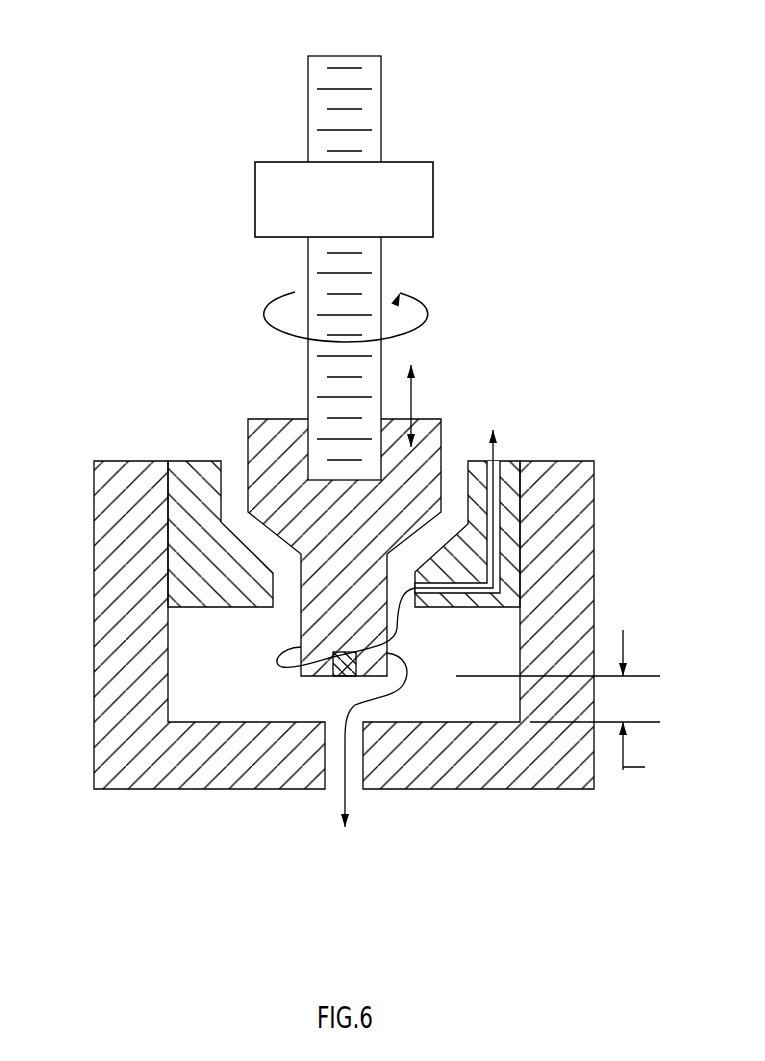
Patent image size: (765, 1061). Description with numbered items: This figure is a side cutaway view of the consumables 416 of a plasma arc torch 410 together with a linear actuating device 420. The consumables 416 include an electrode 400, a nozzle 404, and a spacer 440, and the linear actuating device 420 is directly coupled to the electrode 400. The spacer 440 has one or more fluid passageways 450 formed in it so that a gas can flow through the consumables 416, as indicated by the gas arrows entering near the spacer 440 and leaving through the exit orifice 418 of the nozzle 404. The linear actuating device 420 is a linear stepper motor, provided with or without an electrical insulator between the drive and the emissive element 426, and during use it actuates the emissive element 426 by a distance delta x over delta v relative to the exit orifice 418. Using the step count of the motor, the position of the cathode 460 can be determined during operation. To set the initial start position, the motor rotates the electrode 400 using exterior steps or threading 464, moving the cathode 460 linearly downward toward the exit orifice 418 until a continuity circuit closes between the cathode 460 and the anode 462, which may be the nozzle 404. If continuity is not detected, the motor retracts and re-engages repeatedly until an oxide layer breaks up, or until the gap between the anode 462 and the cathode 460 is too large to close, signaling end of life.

The electrode 400 is at (345, 56).
The torch 410 is at (563, 63).
The linear actuating device 420 is at (433, 198).
The exterior steps or threading 464 is at (307, 271).
The cathode 460 is at (255, 406).
The spacer 440 is at (198, 463).
The consumables 416 is at (656, 411).
The nozzle 404 is at (591, 490).
The fluid passageways 450 is at (502, 583).
The anode 462 is at (105, 697).
The emissive element 426 is at (333, 661).
The exit orifice 418 is at (360, 797).